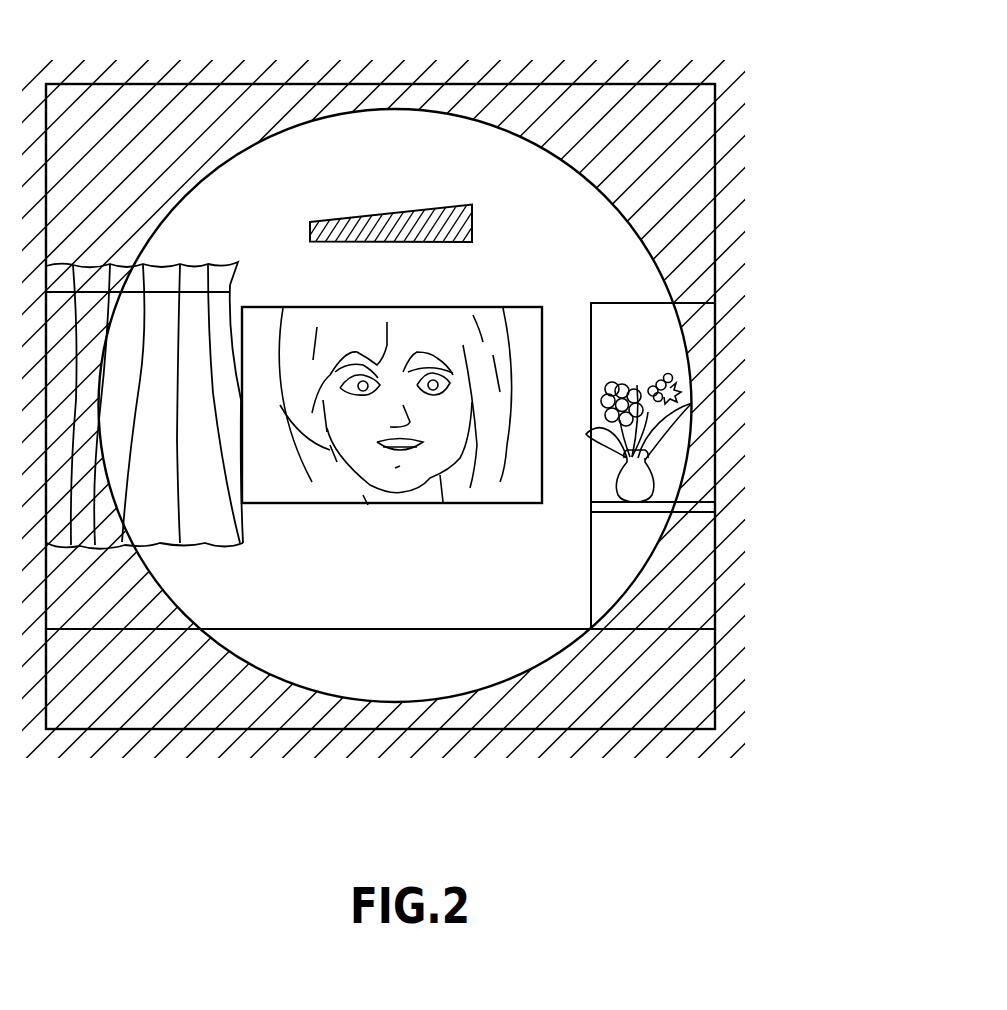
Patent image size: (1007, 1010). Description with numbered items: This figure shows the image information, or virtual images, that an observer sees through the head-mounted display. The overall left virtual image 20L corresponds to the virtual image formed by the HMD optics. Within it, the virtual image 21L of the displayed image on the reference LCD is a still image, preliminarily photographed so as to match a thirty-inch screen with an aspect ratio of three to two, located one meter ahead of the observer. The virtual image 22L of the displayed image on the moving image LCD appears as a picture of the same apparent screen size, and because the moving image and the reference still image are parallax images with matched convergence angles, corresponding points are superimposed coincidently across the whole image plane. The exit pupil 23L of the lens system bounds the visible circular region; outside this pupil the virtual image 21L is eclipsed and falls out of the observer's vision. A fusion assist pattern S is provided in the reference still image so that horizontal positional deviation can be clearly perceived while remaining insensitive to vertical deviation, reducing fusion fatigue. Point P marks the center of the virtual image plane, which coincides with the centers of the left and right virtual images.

The virtual image 20L is at (688, 85).
The virtual image of the displayed image on the reference LCD 21L is at (597, 263).
The virtual image of the displayed image on the moving image LCD 22L is at (366, 569).
The exit pupil of lens system 23L is at (508, 130).
The fusion assist pattern S is at (388, 213).
The center of the virtual image plane P is at (393, 402).